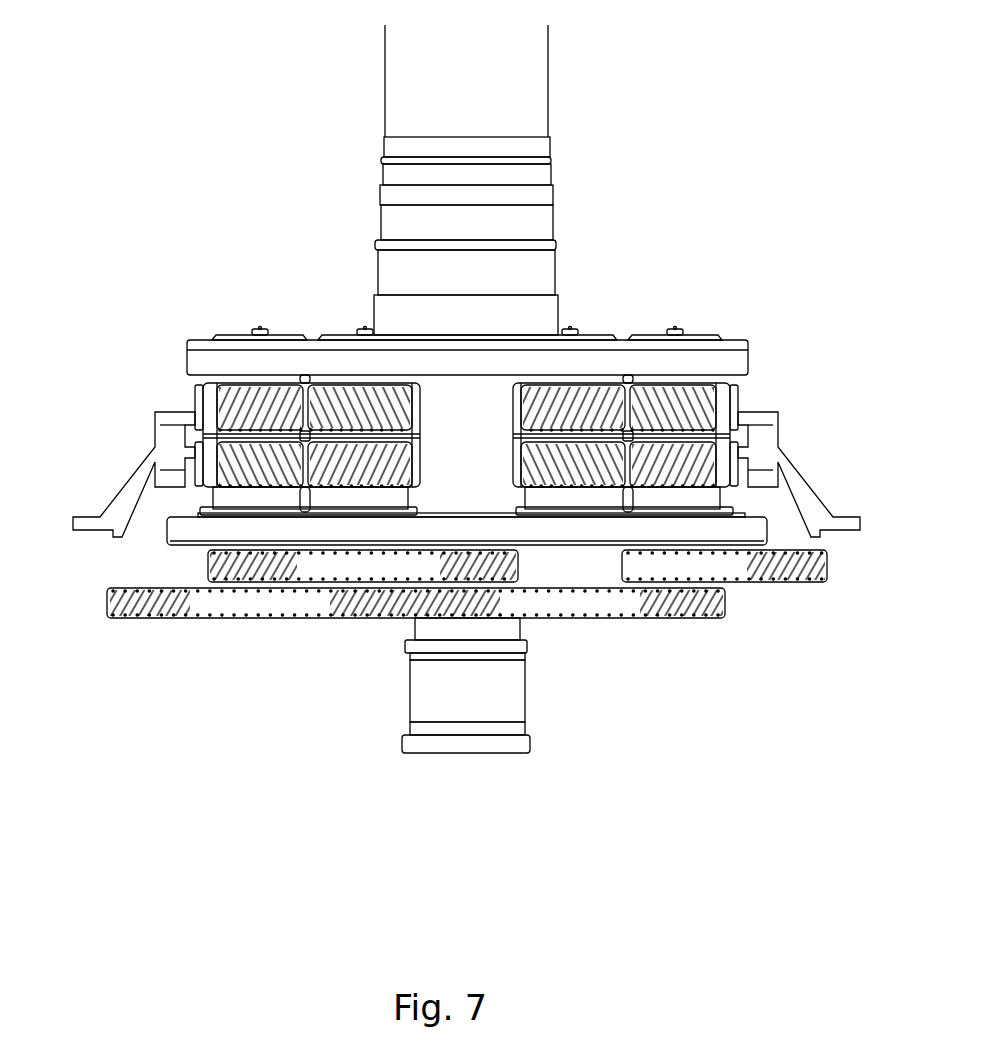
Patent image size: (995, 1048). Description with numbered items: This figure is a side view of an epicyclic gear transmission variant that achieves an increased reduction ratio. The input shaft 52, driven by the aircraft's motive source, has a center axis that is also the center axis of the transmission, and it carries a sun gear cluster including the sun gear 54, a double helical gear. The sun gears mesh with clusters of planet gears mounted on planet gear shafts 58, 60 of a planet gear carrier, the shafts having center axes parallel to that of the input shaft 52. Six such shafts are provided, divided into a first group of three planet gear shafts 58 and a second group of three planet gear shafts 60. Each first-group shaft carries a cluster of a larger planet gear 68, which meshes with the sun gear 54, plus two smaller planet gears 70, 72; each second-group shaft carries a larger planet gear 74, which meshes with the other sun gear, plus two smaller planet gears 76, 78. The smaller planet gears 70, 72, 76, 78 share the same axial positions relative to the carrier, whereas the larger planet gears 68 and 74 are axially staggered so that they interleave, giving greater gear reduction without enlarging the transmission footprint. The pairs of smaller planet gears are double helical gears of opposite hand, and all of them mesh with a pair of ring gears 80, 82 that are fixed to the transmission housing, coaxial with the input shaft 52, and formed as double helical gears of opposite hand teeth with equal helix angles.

The input shaft 52 is at (412, 700).
The sun gear 54 is at (407, 623).
The planet gear shaft 58 is at (217, 492).
The planet gear shaft 60 is at (362, 503).
The larger planet gear 68 is at (198, 603).
The smaller planet gear 70 is at (215, 457).
The smaller planet gear 72 is at (235, 397).
The larger planet gear 74 is at (255, 573).
The smaller planet gear 76 is at (342, 440).
The smaller planet gear 78 is at (367, 403).
The ring gear 80 is at (202, 475).
The ring gear 82 is at (205, 412).